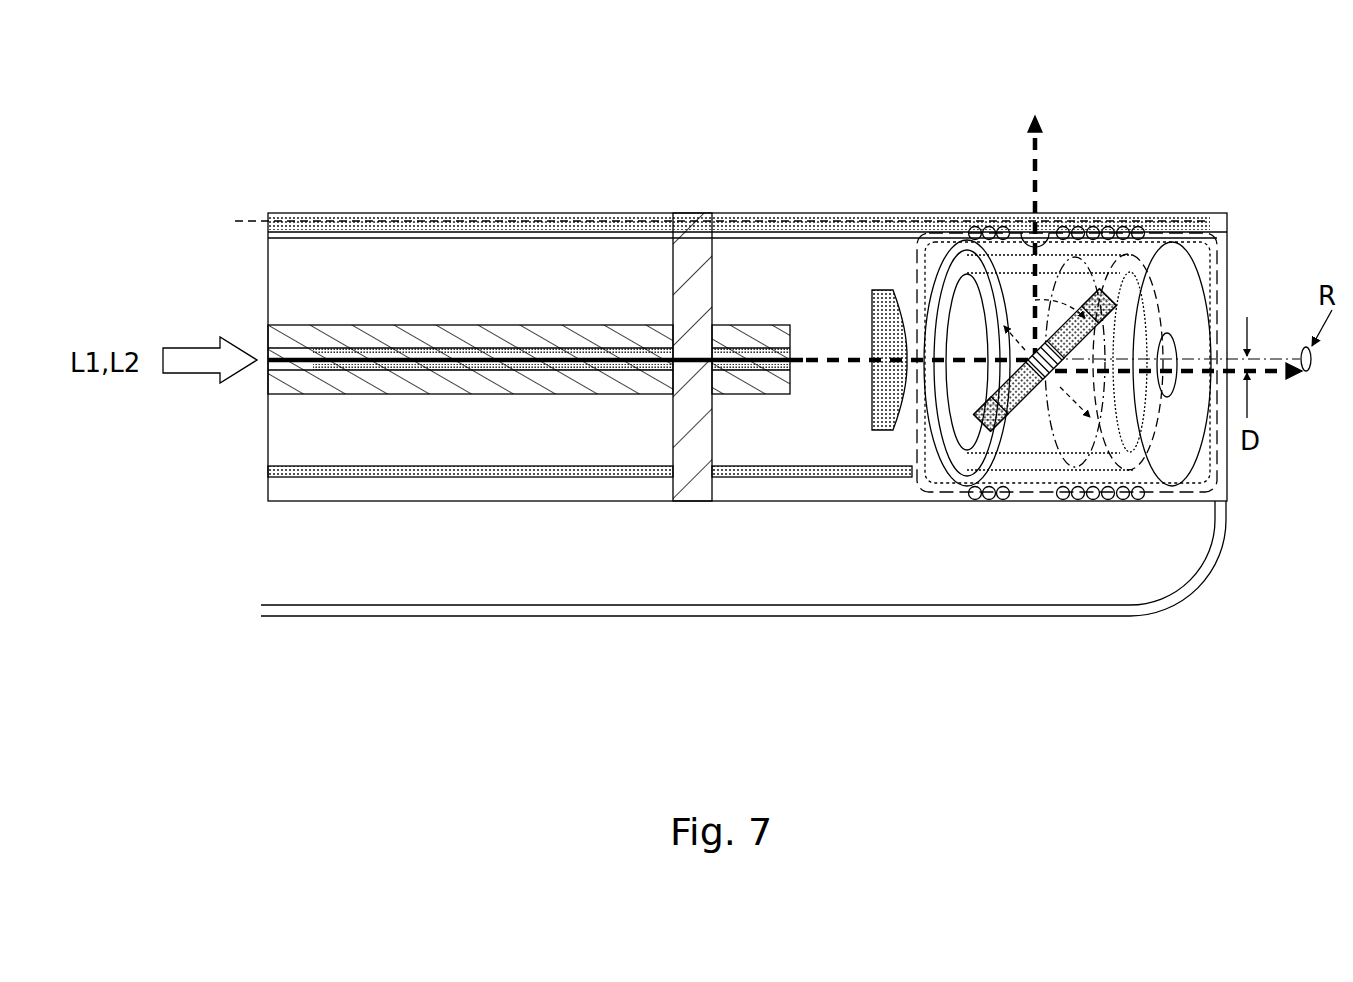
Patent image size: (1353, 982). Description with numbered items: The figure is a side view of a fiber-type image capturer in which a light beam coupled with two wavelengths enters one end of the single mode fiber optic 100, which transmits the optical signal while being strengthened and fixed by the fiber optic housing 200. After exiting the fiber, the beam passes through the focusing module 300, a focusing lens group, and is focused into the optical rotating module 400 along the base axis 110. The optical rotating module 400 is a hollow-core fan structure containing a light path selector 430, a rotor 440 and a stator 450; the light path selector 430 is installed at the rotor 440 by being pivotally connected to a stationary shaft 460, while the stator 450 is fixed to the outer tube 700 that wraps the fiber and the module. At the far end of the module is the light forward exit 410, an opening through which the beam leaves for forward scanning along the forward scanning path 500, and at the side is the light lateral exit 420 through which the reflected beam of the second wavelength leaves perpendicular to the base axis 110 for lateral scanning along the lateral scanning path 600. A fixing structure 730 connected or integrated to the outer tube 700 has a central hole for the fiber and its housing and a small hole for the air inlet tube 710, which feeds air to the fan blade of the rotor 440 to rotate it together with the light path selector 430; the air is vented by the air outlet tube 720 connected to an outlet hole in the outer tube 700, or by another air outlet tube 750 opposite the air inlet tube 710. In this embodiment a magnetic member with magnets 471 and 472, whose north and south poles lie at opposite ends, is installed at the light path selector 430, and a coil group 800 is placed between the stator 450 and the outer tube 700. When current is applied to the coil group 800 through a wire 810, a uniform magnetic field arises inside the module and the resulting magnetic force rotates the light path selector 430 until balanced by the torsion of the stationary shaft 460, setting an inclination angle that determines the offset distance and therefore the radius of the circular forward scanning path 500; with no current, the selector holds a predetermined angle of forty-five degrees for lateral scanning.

The single mode fiber optic 100 is at (370, 355).
The base axis 110 is at (1297, 357).
The fiber optic housing 200 is at (462, 335).
The focusing module 300 is at (878, 290).
The optical rotating module 400 is at (1232, 215).
The light forward exit 410 is at (1163, 320).
The light lateral exit 420 is at (1028, 235).
The light path selector 430 is at (1062, 250).
The rotor 440 is at (940, 480).
The stator 450 is at (1210, 252).
The stationary shaft 460 is at (1040, 410).
The magnet 471 is at (1110, 255).
The magnet 472 is at (985, 440).
The forward scanning path 500 is at (1283, 378).
The lateral scanning path 600 is at (1045, 150).
The outer tube 700 is at (355, 501).
The air inlet tube 710 is at (472, 478).
The air outlet tube 720 is at (692, 616).
The fixing structure 730 is at (690, 220).
The air outlet tube 750 is at (543, 213).
The coil group 800 is at (977, 232).
The wire 810 is at (803, 235).